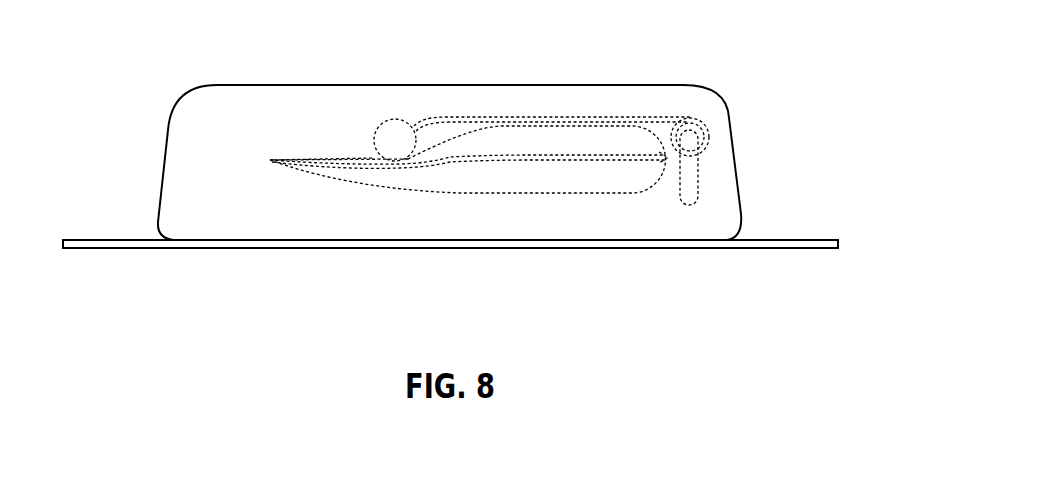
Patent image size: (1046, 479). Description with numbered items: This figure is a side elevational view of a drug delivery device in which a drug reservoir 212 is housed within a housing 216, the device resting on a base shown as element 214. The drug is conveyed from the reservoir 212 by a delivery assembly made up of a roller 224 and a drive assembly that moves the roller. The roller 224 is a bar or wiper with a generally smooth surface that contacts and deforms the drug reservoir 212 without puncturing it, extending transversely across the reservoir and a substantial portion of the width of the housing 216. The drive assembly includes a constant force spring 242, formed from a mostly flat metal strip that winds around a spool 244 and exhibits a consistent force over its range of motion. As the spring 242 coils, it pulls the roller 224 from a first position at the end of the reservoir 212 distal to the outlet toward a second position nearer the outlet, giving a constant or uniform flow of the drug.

The drug reservoir 212 is at (574, 180).
The base plate 214 is at (838, 245).
The housing 216 is at (723, 106).
The roller 224 is at (396, 135).
The constant force spring 242 is at (681, 122).
The spool 244 is at (695, 183).